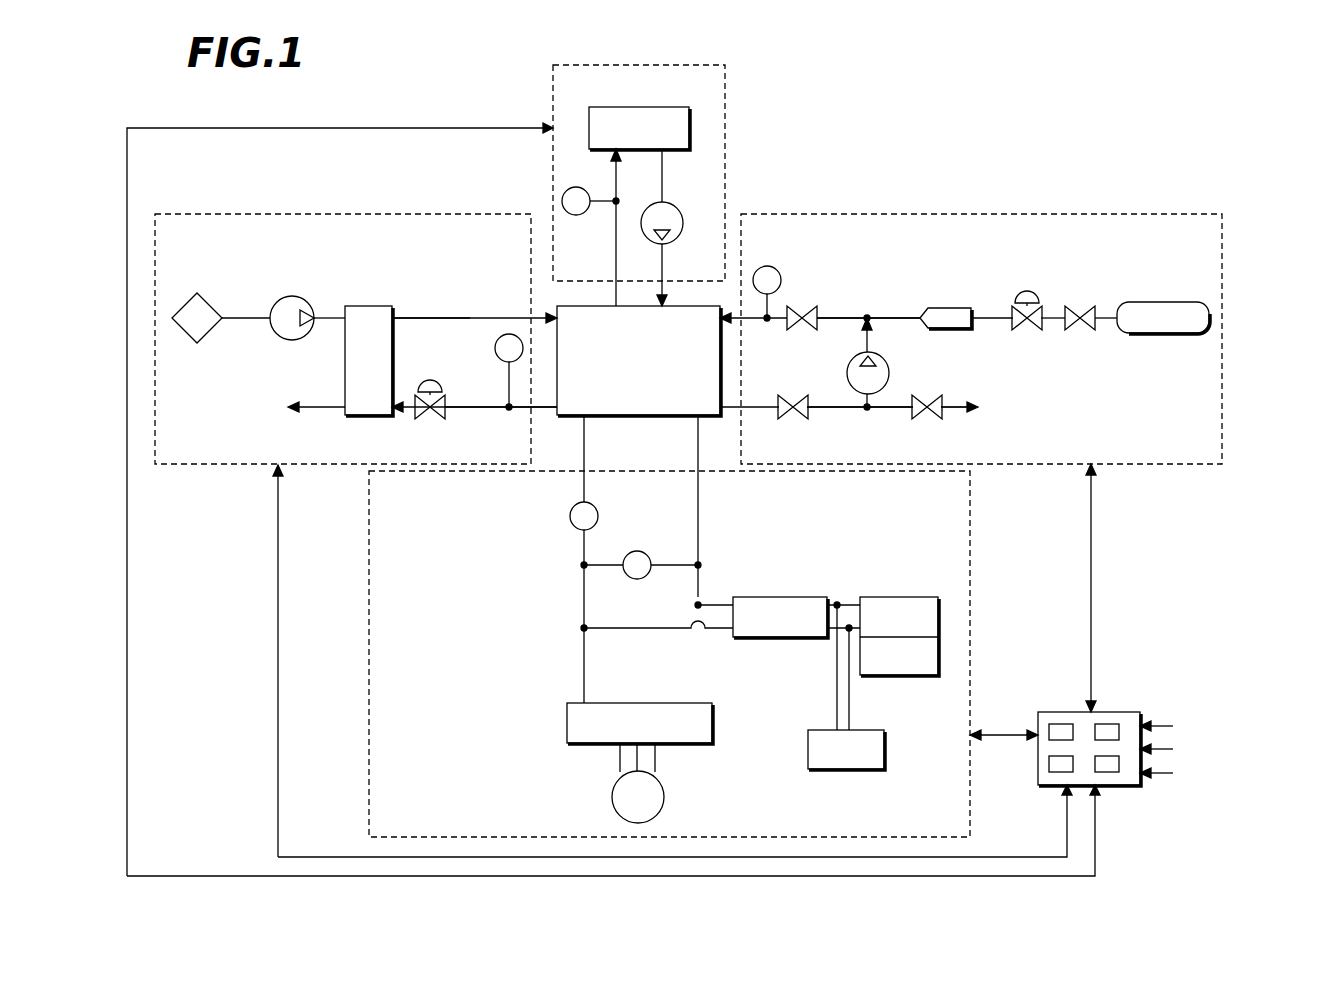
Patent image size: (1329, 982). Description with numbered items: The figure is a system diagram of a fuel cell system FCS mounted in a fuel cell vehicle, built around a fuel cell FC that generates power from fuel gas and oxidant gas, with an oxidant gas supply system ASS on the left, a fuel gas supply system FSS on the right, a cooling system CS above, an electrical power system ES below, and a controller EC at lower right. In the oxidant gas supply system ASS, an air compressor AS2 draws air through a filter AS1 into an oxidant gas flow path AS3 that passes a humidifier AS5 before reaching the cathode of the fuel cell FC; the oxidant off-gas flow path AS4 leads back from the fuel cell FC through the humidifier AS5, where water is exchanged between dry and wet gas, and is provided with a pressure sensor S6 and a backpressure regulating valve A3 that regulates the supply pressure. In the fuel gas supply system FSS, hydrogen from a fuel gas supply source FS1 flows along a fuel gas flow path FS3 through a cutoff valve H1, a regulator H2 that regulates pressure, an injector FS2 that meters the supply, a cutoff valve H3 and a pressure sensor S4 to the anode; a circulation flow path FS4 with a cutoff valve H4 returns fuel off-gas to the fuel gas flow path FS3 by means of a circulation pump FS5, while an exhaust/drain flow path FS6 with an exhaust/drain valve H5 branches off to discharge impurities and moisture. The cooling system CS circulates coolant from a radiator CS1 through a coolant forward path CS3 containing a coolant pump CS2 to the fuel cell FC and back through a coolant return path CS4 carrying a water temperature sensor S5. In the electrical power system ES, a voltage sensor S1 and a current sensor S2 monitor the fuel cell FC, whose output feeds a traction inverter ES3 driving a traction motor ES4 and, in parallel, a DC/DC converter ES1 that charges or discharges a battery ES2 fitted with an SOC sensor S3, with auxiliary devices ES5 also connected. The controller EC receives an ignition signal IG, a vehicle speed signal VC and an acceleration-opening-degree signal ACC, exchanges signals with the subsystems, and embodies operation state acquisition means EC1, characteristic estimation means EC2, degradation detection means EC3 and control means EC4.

The oxidant gas supply system ASS is at (322, 214).
The filter AS1 is at (208, 302).
The air compressor AS2 is at (291, 296).
The oxidant gas flow path AS3 is at (405, 318).
The oxidant off-gas flow path AS4 is at (489, 409).
The humidifier AS5 is at (370, 306).
The backpressure regulating valve A3 is at (434, 380).
The pressure sensor S6 is at (498, 353).
The fuel cell FC is at (632, 416).
The cooling system CS is at (725, 107).
The radiator CS1 is at (633, 107).
The coolant pump CS2 is at (683, 216).
The coolant forward path CS3 is at (663, 175).
The coolant return path CS4 is at (616, 272).
The water temperature sensor S5 is at (565, 190).
The fuel cell system FCS is at (1253, 160).
The fuel gas supply system FSS is at (1222, 278).
The pressure sensor S4 is at (767, 266).
The cutoff valve H3 is at (804, 310).
The fuel gas flow path FS3 is at (843, 318).
The injector FS2 is at (946, 308).
The regulator H2 is at (1030, 291).
The cutoff valve H1 is at (1080, 310).
The fuel gas supply source FS1 is at (1160, 302).
The circulation pump FS5 is at (890, 375).
The exhaust/drain flow path FS6 is at (955, 401).
The cutoff valve H4 is at (793, 417).
The circulation flow path FS4 is at (832, 409).
The exhaust/drain valve H5 is at (925, 417).
The electrical power system ES is at (970, 595).
The voltage sensor S1 is at (644, 552).
The current sensor S2 is at (571, 526).
The DC/DC converter ES1 is at (776, 597).
The battery ES2 is at (900, 597).
The traction inverter ES3 is at (713, 726).
The traction motor ES4 is at (665, 800).
The auxiliary devices ES5 is at (846, 771).
The SOC sensor S3 is at (893, 677).
The controller EC is at (1120, 712).
The operation state acquisition means EC1 is at (1058, 724).
The characteristic estimation means EC2 is at (1107, 724).
The degradation detection means EC3 is at (1055, 772).
The control means EC4 is at (1108, 772).
The ignition signal IG is at (1167, 727).
The vehicle speed signal VC is at (1169, 750).
The acceleration-opening-degree signal ACC is at (1175, 774).